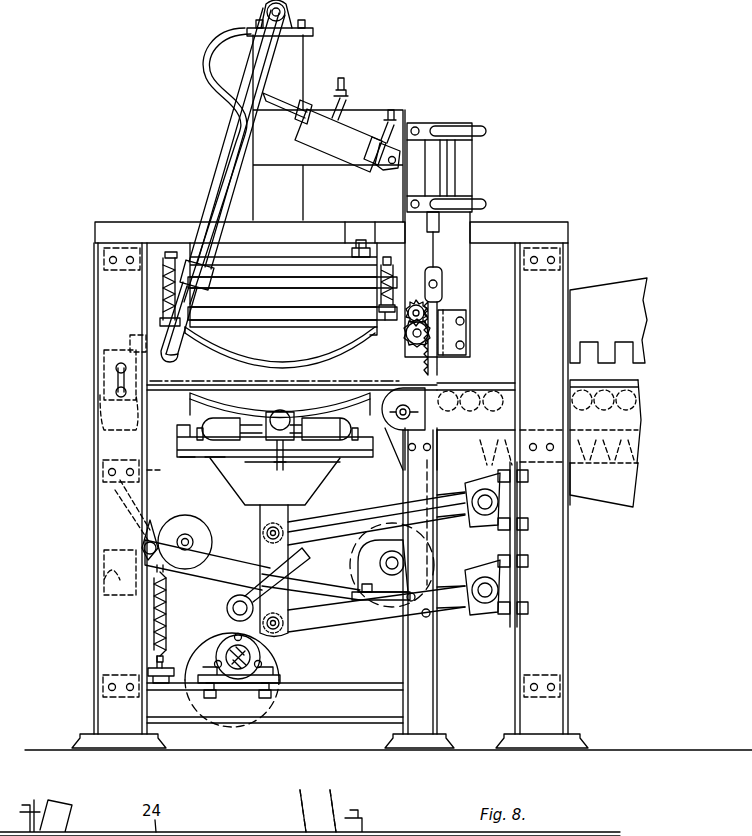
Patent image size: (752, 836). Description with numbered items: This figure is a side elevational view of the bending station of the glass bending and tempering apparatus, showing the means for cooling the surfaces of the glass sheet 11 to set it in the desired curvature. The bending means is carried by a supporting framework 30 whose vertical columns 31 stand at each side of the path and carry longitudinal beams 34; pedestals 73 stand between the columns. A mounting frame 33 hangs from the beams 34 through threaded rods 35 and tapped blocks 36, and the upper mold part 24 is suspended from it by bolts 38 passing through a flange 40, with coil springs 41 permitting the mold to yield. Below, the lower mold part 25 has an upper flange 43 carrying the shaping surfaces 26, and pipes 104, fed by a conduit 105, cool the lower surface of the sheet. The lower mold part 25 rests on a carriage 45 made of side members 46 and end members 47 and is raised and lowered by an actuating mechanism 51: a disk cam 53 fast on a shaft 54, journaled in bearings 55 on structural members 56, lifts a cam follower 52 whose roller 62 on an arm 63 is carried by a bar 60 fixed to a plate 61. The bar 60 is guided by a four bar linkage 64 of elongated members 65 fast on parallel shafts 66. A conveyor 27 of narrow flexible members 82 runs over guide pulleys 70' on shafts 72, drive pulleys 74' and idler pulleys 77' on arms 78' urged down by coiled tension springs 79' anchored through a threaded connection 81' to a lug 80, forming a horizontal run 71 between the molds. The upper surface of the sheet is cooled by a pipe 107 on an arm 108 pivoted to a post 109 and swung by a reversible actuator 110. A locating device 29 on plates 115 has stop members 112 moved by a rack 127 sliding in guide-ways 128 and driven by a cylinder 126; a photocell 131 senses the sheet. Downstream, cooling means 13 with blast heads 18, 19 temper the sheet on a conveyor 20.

The supporting framework 30 is at (103, 207).
The beams 34 is at (152, 225).
The vertical columns 31 is at (100, 335).
The pedestals 73 is at (422, 674).
The plates 115 is at (458, 256).
The post 109 is at (290, 68).
The arm 108 is at (217, 180).
The pipe 107 is at (176, 356).
The bolts 38 is at (162, 248).
The flange 40 is at (163, 278).
The coil springs 41 is at (163, 292).
The reversible actuator 110 is at (345, 125).
The locating device 29 is at (485, 184).
The cylinder 126 is at (445, 160).
The toothed rack 127 is at (437, 297).
The guide-ways 128 is at (447, 322).
The stop members 112 is at (420, 370).
The mounting frame 33 is at (291, 258).
The tapped blocks 36 is at (358, 238).
The rods 35 is at (356, 247).
The upper mold part 24 is at (385, 300).
The horizontal run 71 is at (365, 336).
The glass sheet 11 is at (216, 380).
The conveyor 27 is at (298, 382).
The shaping surfaces 26 is at (250, 394).
The lower mold part 25 is at (205, 412).
The upper flange 43 is at (195, 401).
The pipes 104 is at (243, 438).
The side members 46 is at (180, 462).
The carriage 45 is at (213, 462).
The end members 47 is at (224, 470).
The conduit 105 is at (302, 491).
The plate 61 is at (268, 510).
The bar 60 is at (270, 549).
The four bar linkage 64 is at (352, 520).
The elongated members 65 is at (318, 530).
The cam follower 52 is at (218, 609).
The roller 62 is at (230, 612).
The arm 63 is at (297, 582).
The flexible members 82 is at (311, 591).
The idler pulleys 77' is at (195, 540).
The actuating mechanism 51 is at (207, 565).
The photocell 131 is at (150, 548).
The coiled tension springs 79' is at (173, 606).
The arms 78' is at (175, 570).
The threaded connection 81' is at (131, 652).
The lug 80 is at (162, 677).
The disk cam 53 is at (262, 640).
The shaft 54 is at (250, 660).
The bearings 55 is at (277, 690).
The structural members 56 is at (316, 712).
The drive pulleys 74' is at (383, 565).
The guide pulleys 70' is at (266, 414).
The shafts 72 is at (410, 413).
The conveyor 20 is at (640, 403).
The lower blast head 19 is at (598, 485).
The upper blast head 18 is at (608, 300).
The cooling means 13 is at (593, 283).
The parallel shafts 66 is at (500, 503).